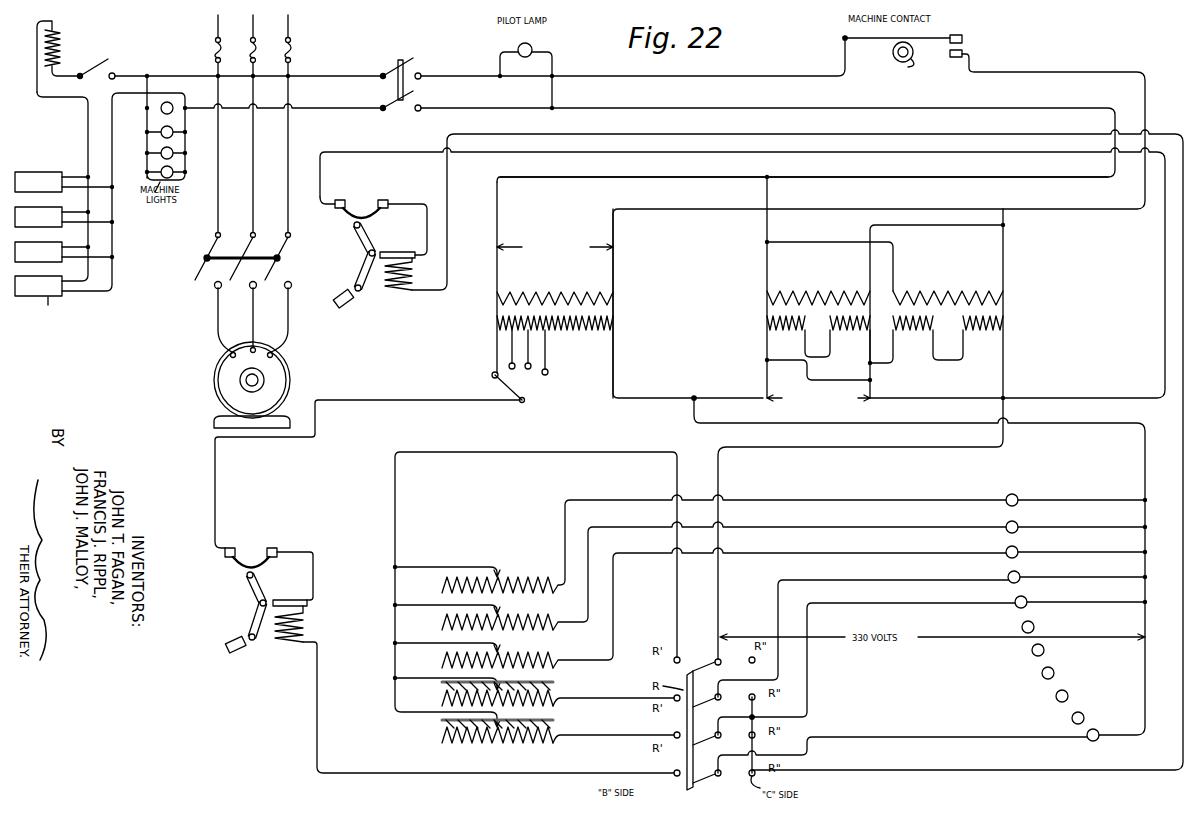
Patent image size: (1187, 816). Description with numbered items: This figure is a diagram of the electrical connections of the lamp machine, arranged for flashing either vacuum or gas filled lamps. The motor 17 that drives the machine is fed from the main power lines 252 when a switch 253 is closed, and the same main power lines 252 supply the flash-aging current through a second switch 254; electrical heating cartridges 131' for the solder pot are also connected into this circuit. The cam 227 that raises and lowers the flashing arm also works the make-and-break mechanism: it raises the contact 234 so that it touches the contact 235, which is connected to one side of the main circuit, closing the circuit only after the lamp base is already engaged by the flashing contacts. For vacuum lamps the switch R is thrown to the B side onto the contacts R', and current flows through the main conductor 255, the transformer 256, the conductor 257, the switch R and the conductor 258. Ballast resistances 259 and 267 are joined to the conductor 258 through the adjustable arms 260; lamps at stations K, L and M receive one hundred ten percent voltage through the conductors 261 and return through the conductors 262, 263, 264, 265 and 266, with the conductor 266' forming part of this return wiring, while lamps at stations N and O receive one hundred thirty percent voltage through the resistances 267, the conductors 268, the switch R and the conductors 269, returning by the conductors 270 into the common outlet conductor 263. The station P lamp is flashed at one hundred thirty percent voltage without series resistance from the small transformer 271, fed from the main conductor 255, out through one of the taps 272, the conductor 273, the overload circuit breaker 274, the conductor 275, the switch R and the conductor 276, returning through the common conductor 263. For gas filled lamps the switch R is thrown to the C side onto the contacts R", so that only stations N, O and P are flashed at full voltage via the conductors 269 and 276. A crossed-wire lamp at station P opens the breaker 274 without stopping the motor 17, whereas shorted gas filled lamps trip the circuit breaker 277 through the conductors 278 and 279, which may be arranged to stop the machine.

The electrical heating cartridge 131' is at (64, 237).
The motor 17 is at (290, 380).
The cam 227 is at (913, 61).
The contact 234 is at (963, 40).
The contact 235 is at (963, 54).
The main power lines 252 is at (283, 192).
The switch 253 is at (292, 252).
The switch 254 is at (401, 58).
The conductor 255 is at (1073, 72).
The transformer 256 is at (1010, 315).
The conductor 257 is at (936, 447).
The conductor 258 is at (397, 527).
The ballast resistances 259 is at (527, 573).
The adjustable arm 260 is at (418, 575).
The conductors 261 is at (633, 553).
The conductors 262 is at (1088, 552).
The common outlet conductor 263 is at (1145, 450).
The conductor 264 is at (723, 398).
The conductor 265 is at (765, 222).
The conductor 266 is at (650, 132).
The conductor 266' is at (802, 185).
The resistances 267 is at (556, 724).
The conductors 268 is at (626, 700).
The conductors 269 is at (780, 663).
The conductors 270 is at (1083, 580).
The small transformer 271 is at (613, 300).
The taps 272 is at (492, 376).
The conductor 273 is at (386, 400).
The overload circuit breaker 274 is at (253, 592).
The conductor 275 is at (356, 773).
The conductor 276 is at (891, 737).
The circuit breaker 277 is at (370, 242).
The conductor 278 is at (495, 134).
The conductor 279 is at (322, 186).